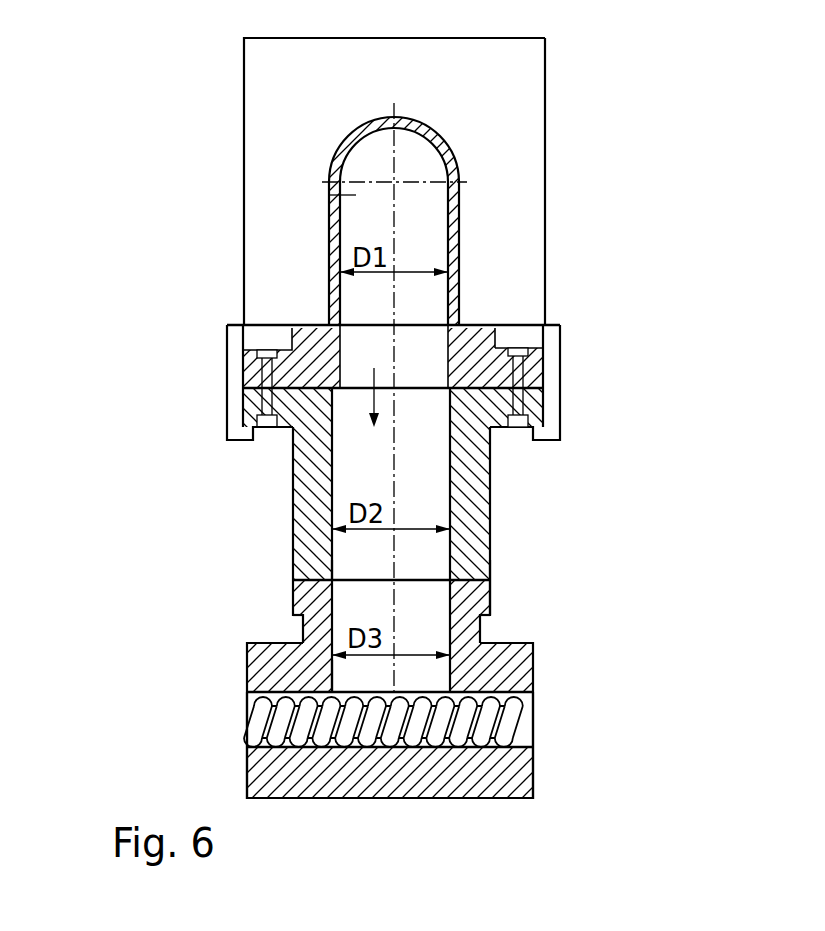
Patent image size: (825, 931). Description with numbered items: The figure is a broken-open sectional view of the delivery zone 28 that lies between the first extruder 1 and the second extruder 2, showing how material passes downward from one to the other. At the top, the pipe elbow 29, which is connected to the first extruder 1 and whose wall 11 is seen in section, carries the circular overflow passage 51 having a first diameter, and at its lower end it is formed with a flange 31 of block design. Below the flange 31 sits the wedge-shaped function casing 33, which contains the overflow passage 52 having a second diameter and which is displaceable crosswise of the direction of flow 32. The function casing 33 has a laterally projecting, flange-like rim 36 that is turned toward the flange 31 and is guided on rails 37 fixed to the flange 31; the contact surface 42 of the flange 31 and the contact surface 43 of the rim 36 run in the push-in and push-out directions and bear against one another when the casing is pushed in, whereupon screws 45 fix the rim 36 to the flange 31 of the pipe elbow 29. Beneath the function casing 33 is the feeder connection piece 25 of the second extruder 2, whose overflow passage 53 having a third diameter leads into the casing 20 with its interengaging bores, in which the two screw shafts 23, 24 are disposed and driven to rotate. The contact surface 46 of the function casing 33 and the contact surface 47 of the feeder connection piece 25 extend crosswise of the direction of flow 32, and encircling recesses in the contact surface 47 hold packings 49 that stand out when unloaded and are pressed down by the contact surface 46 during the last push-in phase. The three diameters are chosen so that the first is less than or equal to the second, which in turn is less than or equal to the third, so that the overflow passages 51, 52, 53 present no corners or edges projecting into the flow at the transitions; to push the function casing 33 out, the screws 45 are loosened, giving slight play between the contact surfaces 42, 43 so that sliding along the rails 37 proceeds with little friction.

The first extruder 1 is at (557, 127).
The housing wall 11 is at (535, 252).
The pipe elbow 29 is at (330, 244).
The overflow passage 51 is at (353, 195).
The flange 31 is at (313, 325).
The direction of flow 32 is at (372, 380).
The contact surface of the flange 42 is at (545, 355).
The contact surface of the rim 43 is at (527, 407).
The rails 37 is at (230, 390).
The screws 45 is at (260, 407).
The rim 36 is at (287, 427).
The delivery zone 28 is at (552, 488).
The function casing 33 is at (490, 493).
The contact surface of the feeder connection piece 47 is at (293, 592).
The feeder connection piece 25 is at (297, 611).
The packings 49 is at (490, 605).
The contact surface of the function casing 46 is at (490, 568).
The overflow passage 52 is at (340, 567).
The overflow passage 53 is at (340, 673).
The casing 20 is at (527, 667).
The second extruder 2 is at (542, 712).
The screw shaft 23 is at (513, 725).
The screw shaft 24 is at (488, 765).